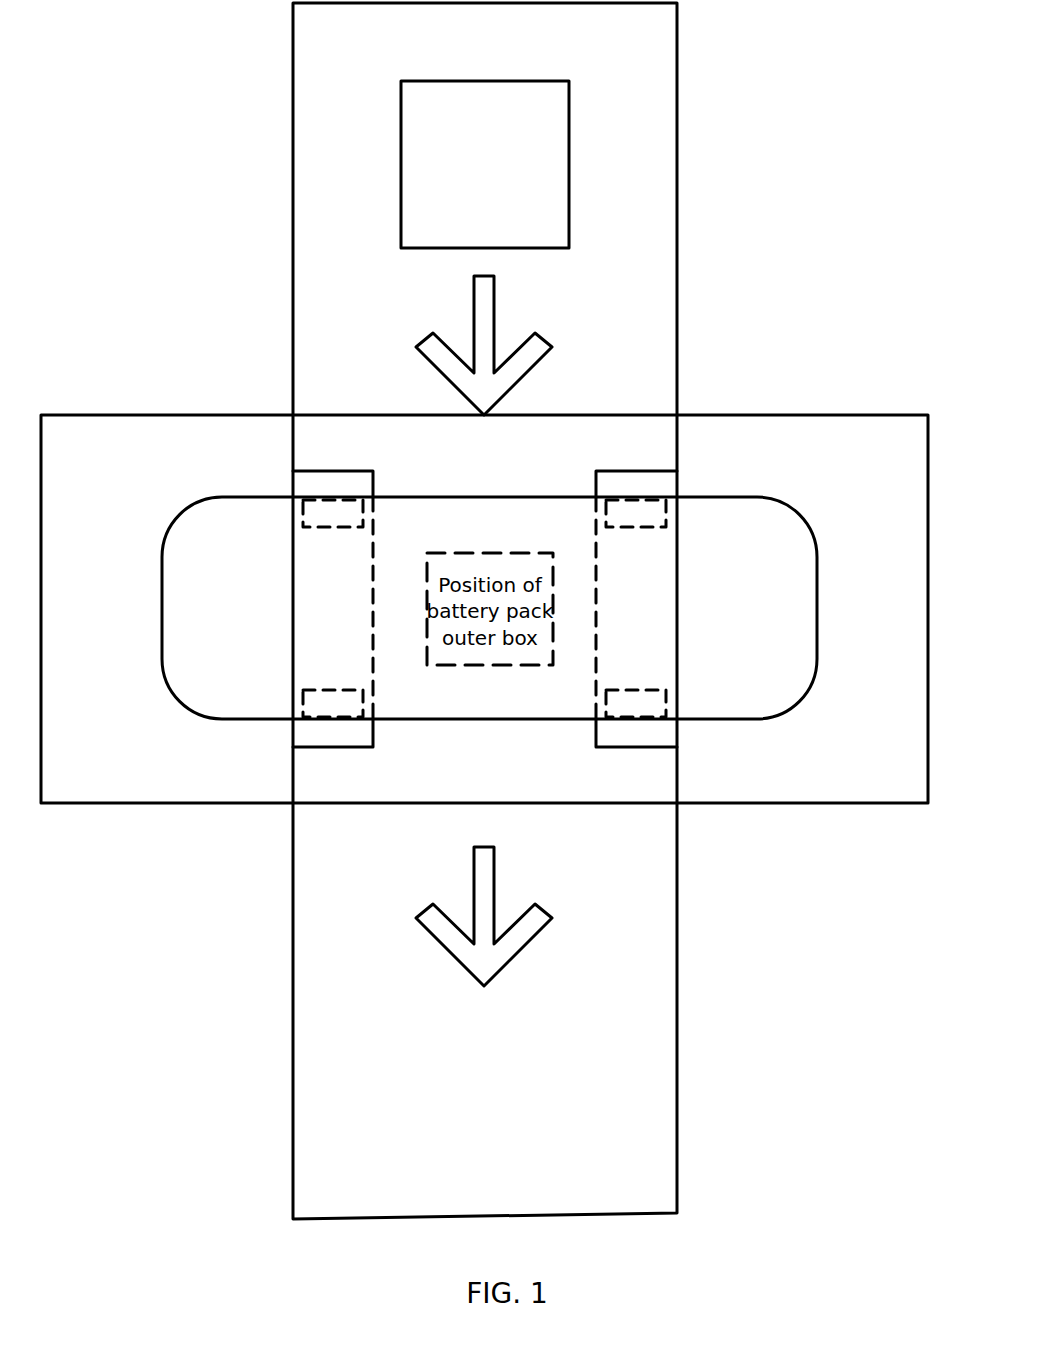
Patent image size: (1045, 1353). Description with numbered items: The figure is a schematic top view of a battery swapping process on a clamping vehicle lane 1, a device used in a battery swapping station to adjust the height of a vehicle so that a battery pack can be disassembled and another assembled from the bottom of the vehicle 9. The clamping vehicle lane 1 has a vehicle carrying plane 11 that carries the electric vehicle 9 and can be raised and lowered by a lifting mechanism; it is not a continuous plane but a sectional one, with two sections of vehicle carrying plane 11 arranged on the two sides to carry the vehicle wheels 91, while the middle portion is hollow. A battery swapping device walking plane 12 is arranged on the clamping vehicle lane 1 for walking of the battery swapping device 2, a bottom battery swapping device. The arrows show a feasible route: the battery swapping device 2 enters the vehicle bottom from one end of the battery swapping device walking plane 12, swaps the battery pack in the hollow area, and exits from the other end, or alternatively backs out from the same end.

The clamping vehicle lane 1 is at (788, 443).
The battery swapping device 2 is at (518, 192).
The vehicle 9 is at (777, 637).
The vehicle carrying plane 11 is at (318, 665).
The battery swapping device walking plane 12 is at (630, 250).
The vehicle wheels 91 is at (332, 502).